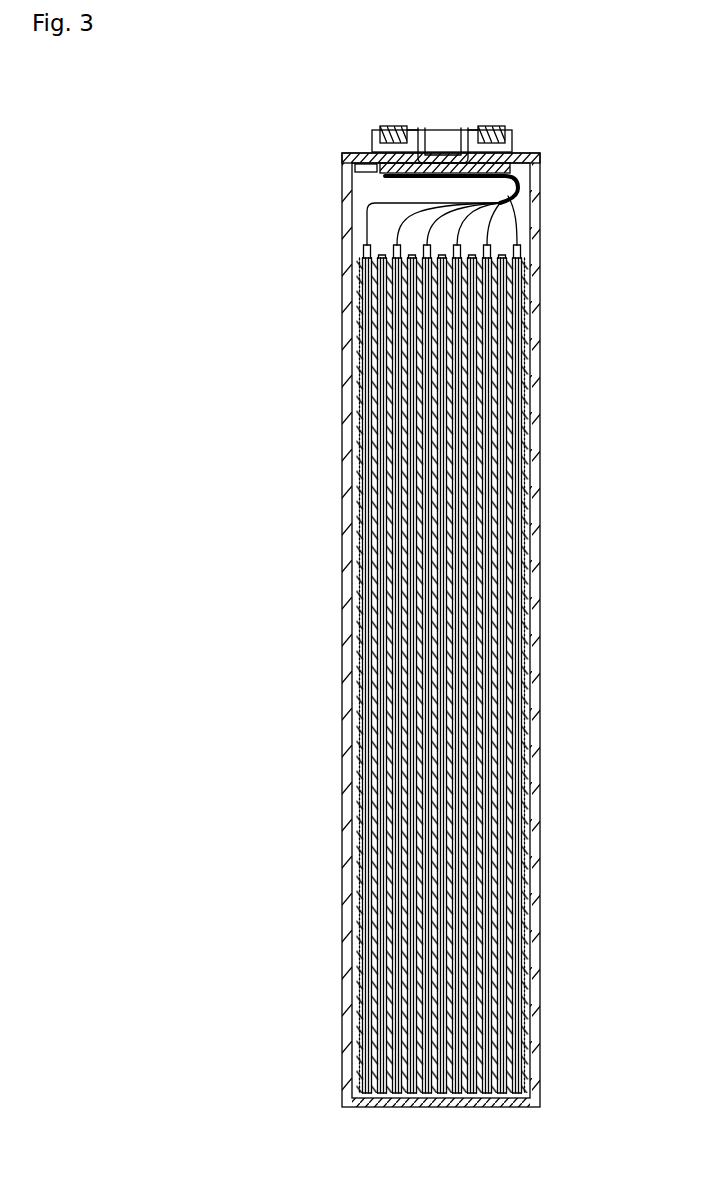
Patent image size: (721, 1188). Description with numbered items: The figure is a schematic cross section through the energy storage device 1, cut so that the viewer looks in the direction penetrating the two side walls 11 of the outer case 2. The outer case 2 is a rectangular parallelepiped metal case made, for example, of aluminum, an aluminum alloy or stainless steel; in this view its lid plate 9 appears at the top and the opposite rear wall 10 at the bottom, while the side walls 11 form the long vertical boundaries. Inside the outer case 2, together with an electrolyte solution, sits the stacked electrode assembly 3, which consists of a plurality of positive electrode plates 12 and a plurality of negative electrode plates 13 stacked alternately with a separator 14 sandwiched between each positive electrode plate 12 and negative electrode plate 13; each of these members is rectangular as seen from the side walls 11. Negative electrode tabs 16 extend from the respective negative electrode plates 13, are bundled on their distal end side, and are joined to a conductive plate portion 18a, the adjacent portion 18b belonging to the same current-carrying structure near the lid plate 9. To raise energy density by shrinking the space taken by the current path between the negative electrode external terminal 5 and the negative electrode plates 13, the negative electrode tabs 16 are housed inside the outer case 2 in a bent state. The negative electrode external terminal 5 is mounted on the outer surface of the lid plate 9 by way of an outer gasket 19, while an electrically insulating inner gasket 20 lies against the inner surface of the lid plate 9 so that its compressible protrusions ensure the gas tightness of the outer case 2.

The energy storage device 1 is at (176, 289).
The outer case 2 is at (338, 672).
The stacked electrode assembly 3 is at (348, 771).
The negative electrode external terminal 5 is at (388, 126).
The lid plate 9 is at (358, 157).
The rear wall 10 is at (385, 1105).
The side walls 11 is at (346, 853).
The positive electrode plates 12 is at (510, 1094).
The negative electrode plates 13 is at (518, 1096).
The separators 14 is at (528, 1075).
The negative electrode tabs 16 is at (520, 195).
The conductive plate portion 18a is at (540, 171).
The internal terminal 18b is at (455, 128).
The outer gasket 19 is at (508, 135).
The inner gasket 20 is at (360, 168).